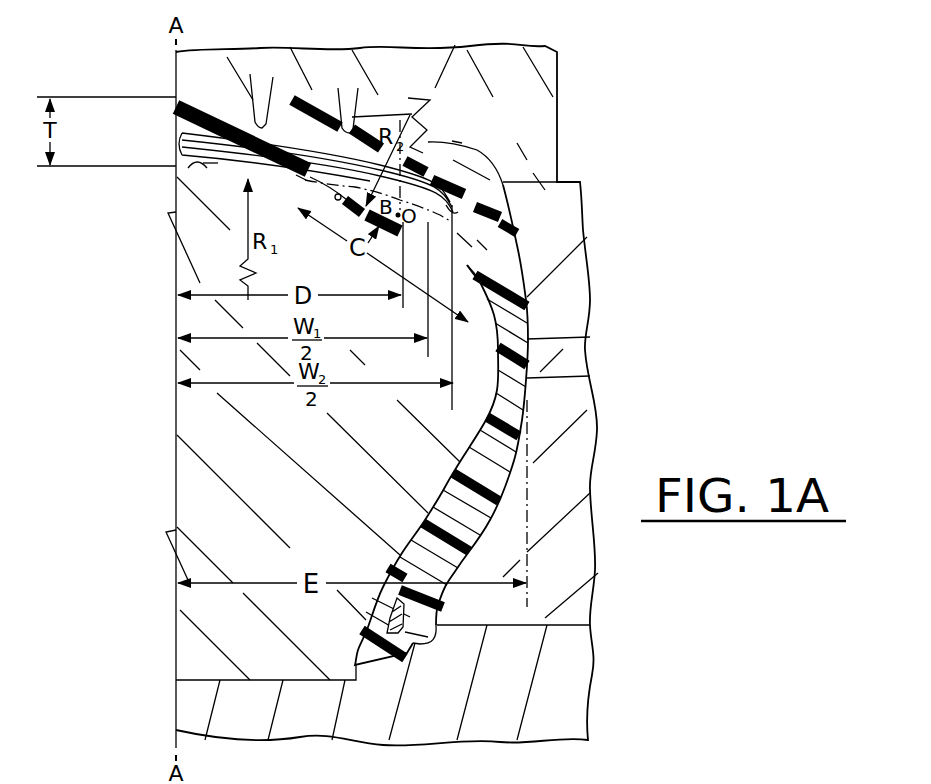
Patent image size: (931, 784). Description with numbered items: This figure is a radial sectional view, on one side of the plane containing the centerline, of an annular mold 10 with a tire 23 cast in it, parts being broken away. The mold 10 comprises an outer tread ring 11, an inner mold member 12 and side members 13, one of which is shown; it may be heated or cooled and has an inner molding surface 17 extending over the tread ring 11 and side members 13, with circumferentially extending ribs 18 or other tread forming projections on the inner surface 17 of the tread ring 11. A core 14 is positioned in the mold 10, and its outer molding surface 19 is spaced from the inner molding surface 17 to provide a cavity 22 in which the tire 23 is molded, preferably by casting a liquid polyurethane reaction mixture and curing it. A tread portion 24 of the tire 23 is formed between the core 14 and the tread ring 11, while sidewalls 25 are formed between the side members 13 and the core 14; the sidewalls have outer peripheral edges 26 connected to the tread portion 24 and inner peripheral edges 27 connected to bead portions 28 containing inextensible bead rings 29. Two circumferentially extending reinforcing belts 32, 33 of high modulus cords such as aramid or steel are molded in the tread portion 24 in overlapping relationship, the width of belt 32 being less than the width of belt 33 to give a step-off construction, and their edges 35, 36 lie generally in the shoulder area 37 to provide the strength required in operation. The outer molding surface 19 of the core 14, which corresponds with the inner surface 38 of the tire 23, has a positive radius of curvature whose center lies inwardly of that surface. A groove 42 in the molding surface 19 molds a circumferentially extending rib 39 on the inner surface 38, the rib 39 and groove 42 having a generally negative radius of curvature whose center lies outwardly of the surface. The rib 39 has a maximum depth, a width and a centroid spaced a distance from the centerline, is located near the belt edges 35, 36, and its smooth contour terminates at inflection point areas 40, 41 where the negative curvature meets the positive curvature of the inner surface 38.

The annular mold 10 is at (543, 42).
The outer tread ring 11 is at (557, 72).
The inner mold member 12 is at (590, 680).
The side members 13 is at (590, 300).
The core 14 is at (186, 412).
The inner molding surface 17 is at (500, 175).
The circumferentially extending ribs 18 is at (270, 90).
The outer molding surface 19 is at (211, 164).
The cavity 22 is at (508, 416).
The tire 23 is at (498, 484).
The tread portion 24 is at (377, 115).
The sidewalls 25 is at (590, 378).
The outer peripheral edges 26 is at (590, 339).
The inner peripheral edges 27 is at (444, 600).
The bead portions 28 is at (430, 638).
The bead rings 29 is at (407, 633).
The reinforcing belt 32 is at (188, 134).
The reinforcing belt 33 is at (182, 146).
The edge of belt 35 is at (423, 174).
The edge of belt 36 is at (449, 210).
The shoulder area 37 is at (458, 141).
The inner surface 38 is at (190, 168).
The rib 39 is at (437, 232).
The inflection point area 40 is at (299, 177).
The inflection point area 41 is at (467, 265).
The groove 42 is at (336, 201).